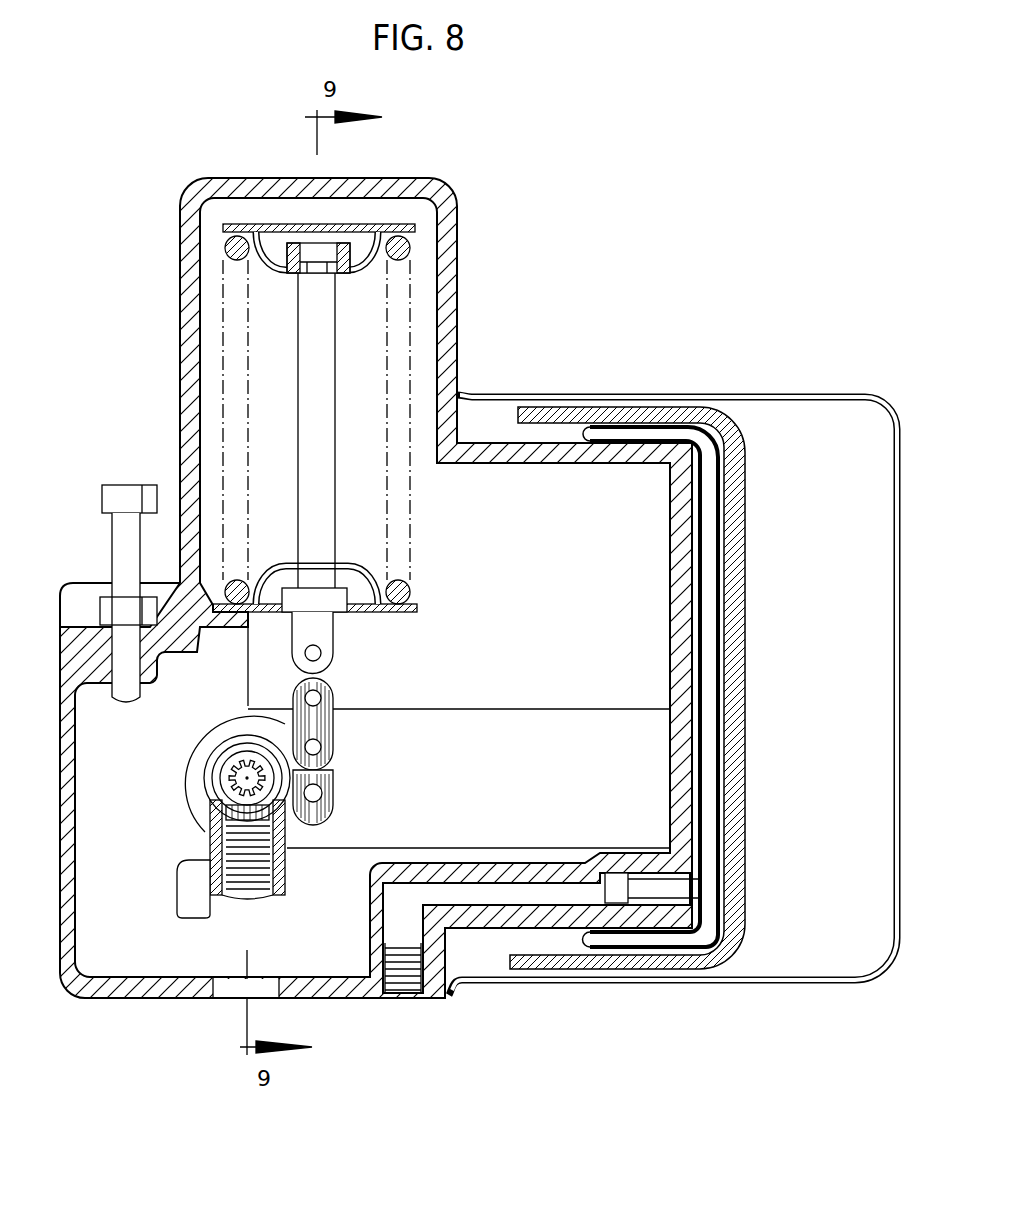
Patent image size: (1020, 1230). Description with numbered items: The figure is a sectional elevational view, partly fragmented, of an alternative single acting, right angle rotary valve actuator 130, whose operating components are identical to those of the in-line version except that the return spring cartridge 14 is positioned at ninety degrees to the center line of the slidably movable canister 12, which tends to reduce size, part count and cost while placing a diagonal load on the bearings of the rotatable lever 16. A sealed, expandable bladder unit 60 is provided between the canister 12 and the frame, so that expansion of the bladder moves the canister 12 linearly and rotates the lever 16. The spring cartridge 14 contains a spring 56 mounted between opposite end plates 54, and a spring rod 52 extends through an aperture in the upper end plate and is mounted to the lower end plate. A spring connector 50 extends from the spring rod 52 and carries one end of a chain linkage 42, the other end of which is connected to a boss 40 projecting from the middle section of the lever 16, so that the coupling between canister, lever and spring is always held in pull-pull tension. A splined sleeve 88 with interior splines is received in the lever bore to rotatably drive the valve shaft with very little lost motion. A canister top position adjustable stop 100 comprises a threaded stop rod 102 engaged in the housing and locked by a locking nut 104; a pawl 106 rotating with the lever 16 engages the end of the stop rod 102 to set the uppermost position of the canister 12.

The canister 12 is at (744, 578).
The spring cartridge 14 is at (381, 376).
The lever 16 is at (226, 703).
The boss 40 is at (313, 818).
The chain linkage 42 is at (333, 735).
The spring connector 50 is at (323, 633).
The spring rod 52 is at (316, 380).
The end plates 54 is at (280, 275).
The spring 56 is at (357, 272).
The bladder unit 60 is at (708, 673).
The splined sleeve 88 is at (220, 792).
The canister top position adjustable stop 100 is at (107, 587).
The stop rod 102 is at (123, 700).
The locking nut 104 is at (93, 603).
The pawl 106 is at (187, 892).
The rotary valve actuator 130 is at (736, 340).